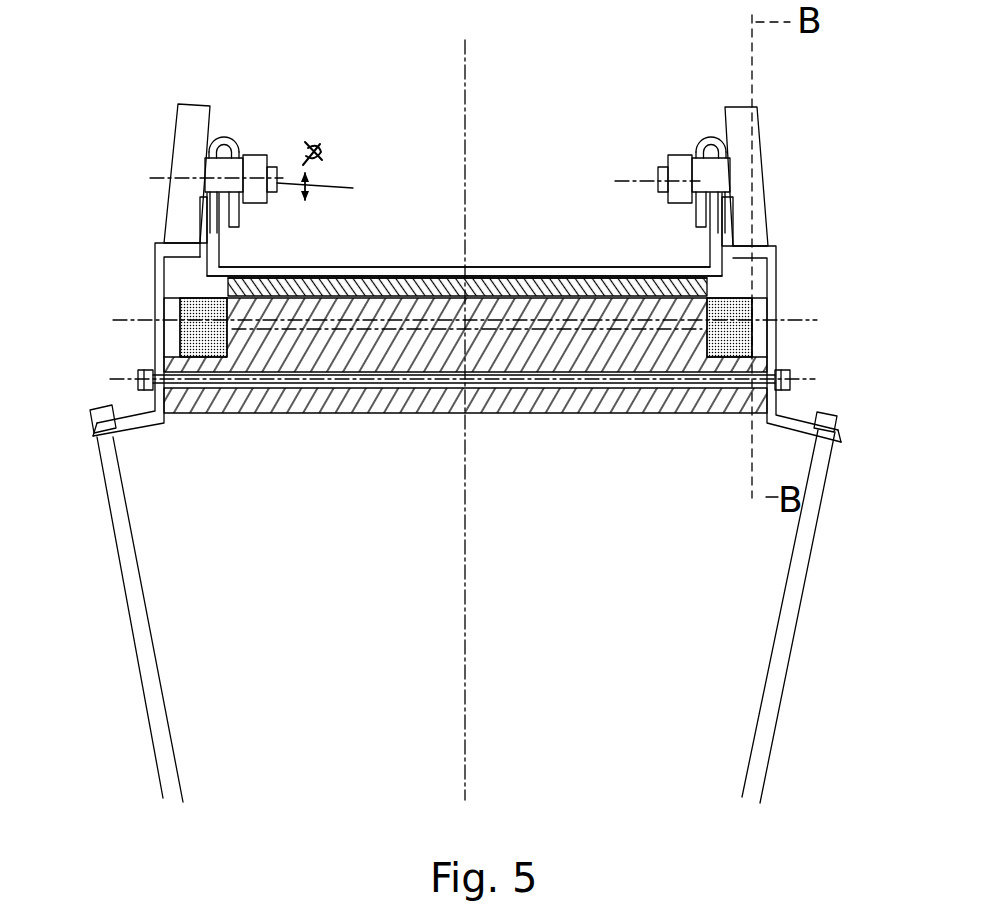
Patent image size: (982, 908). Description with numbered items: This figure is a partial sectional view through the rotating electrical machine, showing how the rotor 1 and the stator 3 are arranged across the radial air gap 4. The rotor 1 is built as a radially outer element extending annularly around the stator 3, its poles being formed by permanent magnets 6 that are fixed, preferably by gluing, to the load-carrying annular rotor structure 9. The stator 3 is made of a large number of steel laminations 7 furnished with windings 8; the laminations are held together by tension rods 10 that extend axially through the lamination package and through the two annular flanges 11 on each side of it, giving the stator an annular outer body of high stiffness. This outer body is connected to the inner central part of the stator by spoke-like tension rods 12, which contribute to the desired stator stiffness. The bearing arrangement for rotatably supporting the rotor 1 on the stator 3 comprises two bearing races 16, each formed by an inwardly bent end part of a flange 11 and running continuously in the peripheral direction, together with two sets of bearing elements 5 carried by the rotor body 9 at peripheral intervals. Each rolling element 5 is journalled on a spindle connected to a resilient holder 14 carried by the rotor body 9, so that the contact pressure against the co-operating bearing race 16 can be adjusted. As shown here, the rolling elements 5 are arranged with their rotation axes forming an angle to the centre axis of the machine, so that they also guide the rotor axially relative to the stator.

The rotor 1 is at (464, 233).
The stator 3 is at (465, 374).
The radial air gap 4 is at (410, 291).
The bearing elements 5 is at (782, 143).
The permanent magnets 6 is at (330, 289).
The steel laminations 7 is at (333, 405).
The windings 8 is at (182, 345).
The annular rotor structure 9 is at (478, 270).
The tension rods 10 is at (793, 323).
The annular flanges 11 is at (782, 259).
The spoke-like tension rods 12 is at (463, 604).
The resilient holder 14 is at (700, 137).
The bearing races 16 is at (160, 240).